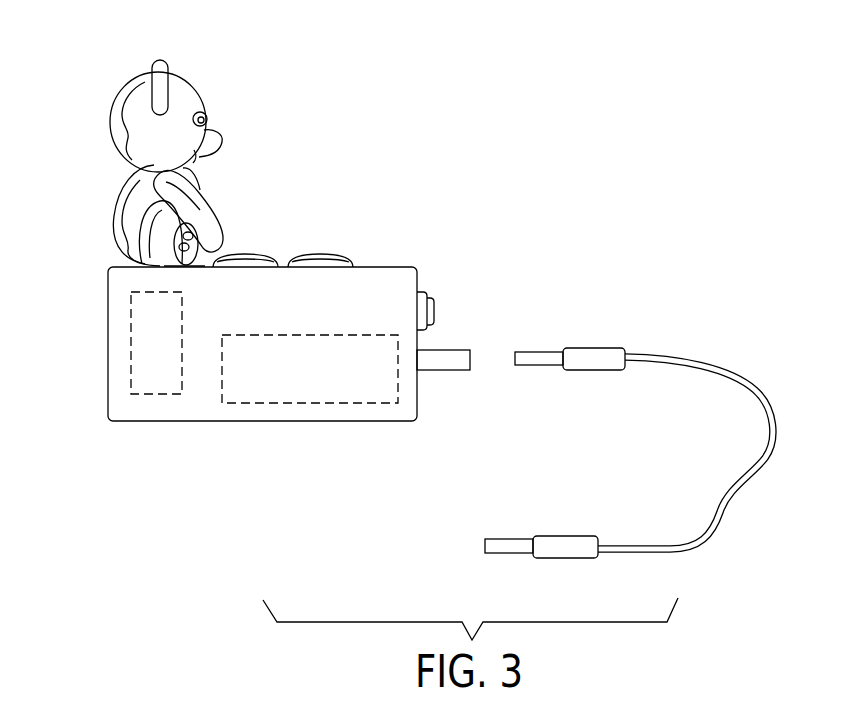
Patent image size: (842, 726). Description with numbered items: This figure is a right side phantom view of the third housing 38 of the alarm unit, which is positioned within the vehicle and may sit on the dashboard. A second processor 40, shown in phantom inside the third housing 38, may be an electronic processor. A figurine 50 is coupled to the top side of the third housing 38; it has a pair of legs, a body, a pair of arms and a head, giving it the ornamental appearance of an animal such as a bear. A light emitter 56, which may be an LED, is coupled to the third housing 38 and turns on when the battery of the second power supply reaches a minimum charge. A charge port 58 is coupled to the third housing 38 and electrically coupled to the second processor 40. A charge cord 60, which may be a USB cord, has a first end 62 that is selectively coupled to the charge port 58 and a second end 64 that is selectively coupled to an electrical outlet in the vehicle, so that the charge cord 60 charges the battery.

The third housing 38 is at (108, 288).
The second processor 40 is at (132, 345).
The figurine 50 is at (123, 92).
The light emitter 56 is at (434, 310).
The charge port 58 is at (443, 370).
The charge cord 60 is at (738, 368).
The first end 62 is at (538, 352).
The second end 64 is at (513, 543).